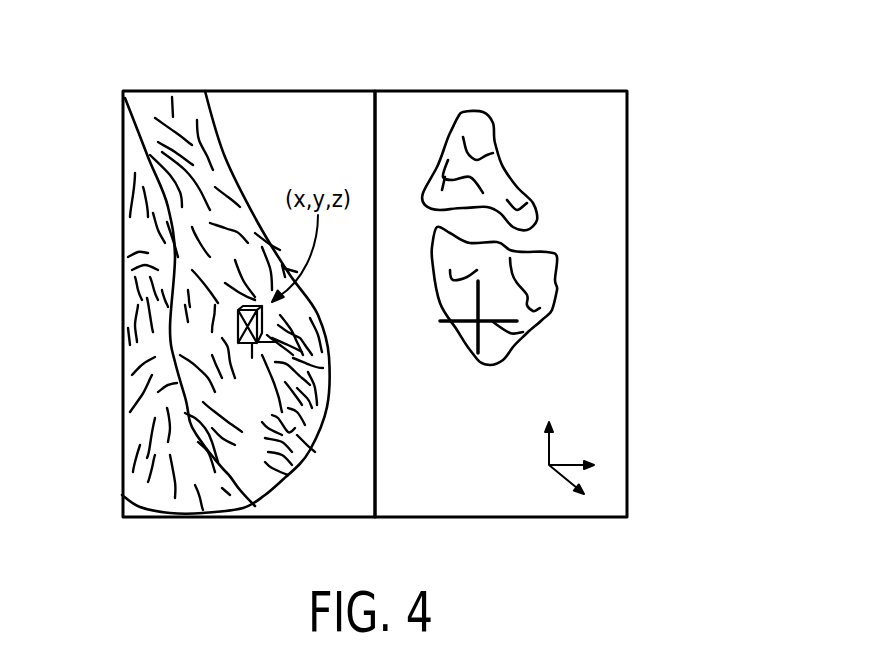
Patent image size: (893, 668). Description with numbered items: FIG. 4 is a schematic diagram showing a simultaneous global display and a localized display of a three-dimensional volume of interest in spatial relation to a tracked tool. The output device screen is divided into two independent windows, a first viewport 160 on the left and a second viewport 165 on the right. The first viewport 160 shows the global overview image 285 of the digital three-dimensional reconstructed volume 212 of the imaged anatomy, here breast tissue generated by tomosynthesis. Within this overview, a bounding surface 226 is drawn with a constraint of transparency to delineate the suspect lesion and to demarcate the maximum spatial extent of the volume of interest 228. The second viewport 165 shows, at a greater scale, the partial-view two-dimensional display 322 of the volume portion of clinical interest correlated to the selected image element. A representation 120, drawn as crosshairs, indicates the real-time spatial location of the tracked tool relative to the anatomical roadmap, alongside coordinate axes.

The global overview image 285 is at (230, 142).
The three-dimensional reconstructed volume 212 is at (170, 213).
The bounding surface 226 is at (233, 328).
The volume of interest 228 is at (250, 362).
The representation 120 is at (478, 346).
The first viewport 160 is at (338, 517).
The second viewport 165 is at (466, 517).
The two-dimensional display 322 is at (602, 172).